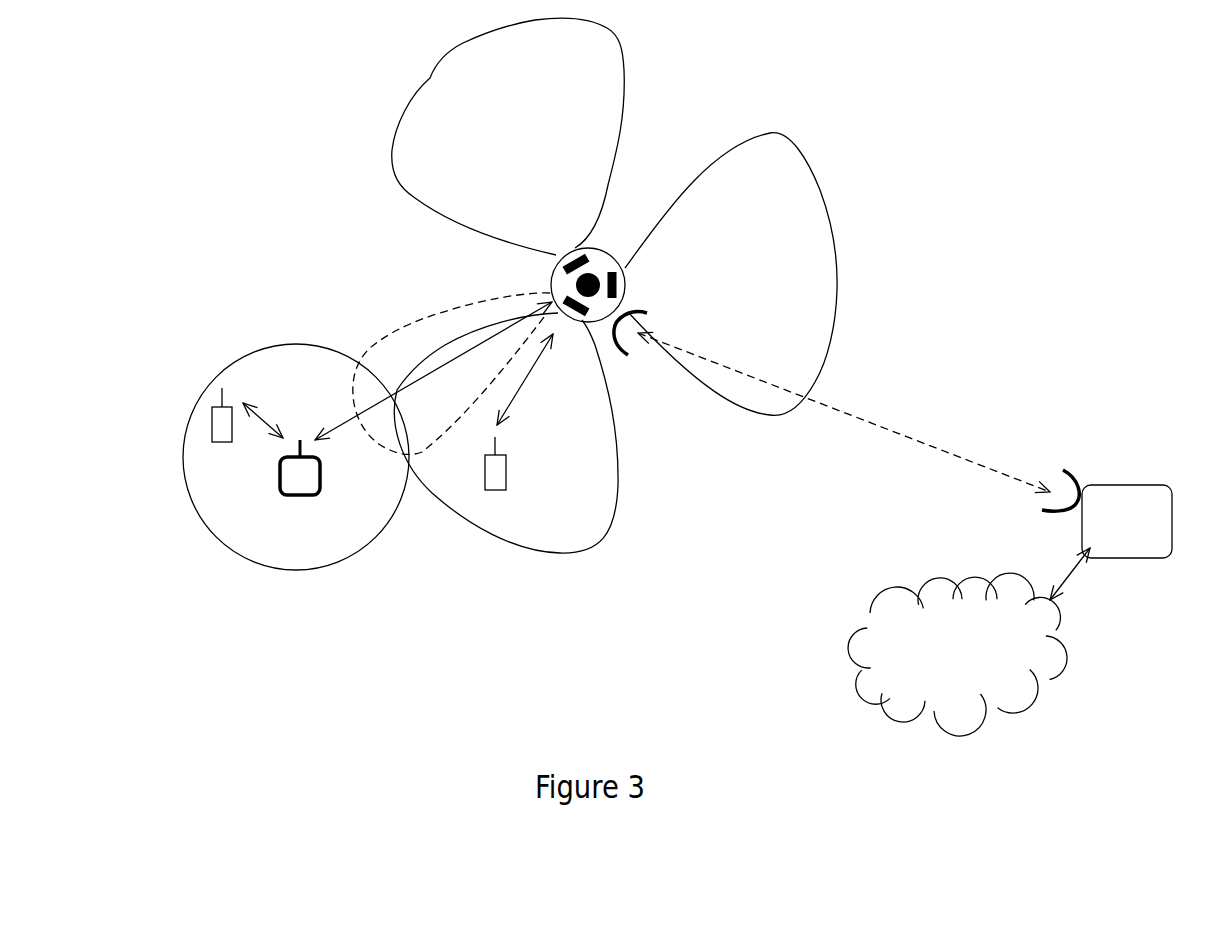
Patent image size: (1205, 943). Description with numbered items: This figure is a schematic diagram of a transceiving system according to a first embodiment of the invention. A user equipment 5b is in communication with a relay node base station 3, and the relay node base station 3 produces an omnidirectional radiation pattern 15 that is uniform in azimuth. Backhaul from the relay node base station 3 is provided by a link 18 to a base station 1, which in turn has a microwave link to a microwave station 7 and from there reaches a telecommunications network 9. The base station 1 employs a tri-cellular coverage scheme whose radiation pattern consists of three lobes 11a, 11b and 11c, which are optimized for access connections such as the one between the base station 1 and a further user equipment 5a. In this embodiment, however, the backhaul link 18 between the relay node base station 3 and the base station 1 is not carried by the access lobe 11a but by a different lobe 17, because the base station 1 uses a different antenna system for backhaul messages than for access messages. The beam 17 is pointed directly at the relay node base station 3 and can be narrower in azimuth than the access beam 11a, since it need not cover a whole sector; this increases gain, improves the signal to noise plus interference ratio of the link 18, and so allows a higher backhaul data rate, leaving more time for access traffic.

The base station 1 is at (550, 276).
The relay node base station 3 is at (288, 497).
The user equipment 5a is at (510, 473).
The user equipment 5b is at (210, 415).
The microwave station 7 is at (1120, 487).
The telecommunications network 9 is at (883, 595).
The lobe of radiation pattern 11a is at (543, 550).
The lobe of radiation pattern 11b is at (827, 215).
The lobe of radiation pattern 11c is at (430, 78).
The omnidirectional radiation pattern 15 is at (235, 552).
The backhaul beam lobe 17 is at (378, 334).
The backhaul link 18 is at (456, 360).